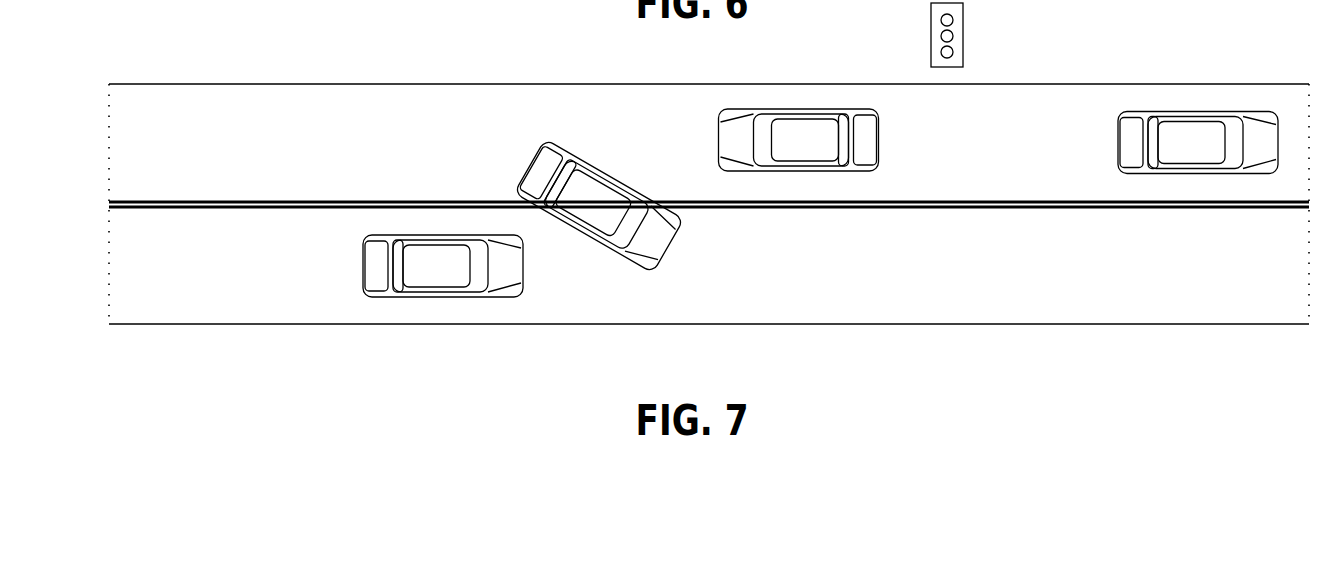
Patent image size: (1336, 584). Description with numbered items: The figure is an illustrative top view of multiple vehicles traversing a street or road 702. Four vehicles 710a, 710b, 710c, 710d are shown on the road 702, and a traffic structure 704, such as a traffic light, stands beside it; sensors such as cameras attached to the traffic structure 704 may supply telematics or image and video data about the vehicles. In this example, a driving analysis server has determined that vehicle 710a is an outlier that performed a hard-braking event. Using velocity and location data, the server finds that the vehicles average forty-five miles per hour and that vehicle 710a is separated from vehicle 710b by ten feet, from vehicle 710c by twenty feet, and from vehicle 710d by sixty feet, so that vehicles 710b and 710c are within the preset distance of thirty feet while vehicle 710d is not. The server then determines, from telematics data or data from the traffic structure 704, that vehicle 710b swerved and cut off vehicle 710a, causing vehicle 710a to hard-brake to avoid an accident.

The street or road 702 is at (208, 326).
The traffic structure 704 is at (965, 41).
The vehicle 710a is at (393, 299).
The vehicle 710b is at (547, 164).
The vehicle 710c is at (857, 140).
The vehicle 710d is at (1207, 112).